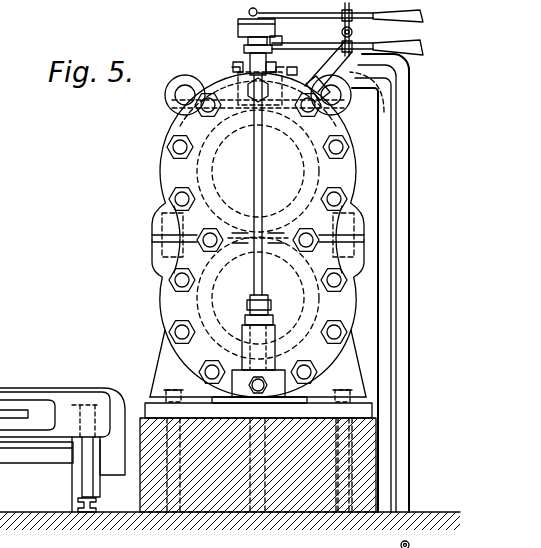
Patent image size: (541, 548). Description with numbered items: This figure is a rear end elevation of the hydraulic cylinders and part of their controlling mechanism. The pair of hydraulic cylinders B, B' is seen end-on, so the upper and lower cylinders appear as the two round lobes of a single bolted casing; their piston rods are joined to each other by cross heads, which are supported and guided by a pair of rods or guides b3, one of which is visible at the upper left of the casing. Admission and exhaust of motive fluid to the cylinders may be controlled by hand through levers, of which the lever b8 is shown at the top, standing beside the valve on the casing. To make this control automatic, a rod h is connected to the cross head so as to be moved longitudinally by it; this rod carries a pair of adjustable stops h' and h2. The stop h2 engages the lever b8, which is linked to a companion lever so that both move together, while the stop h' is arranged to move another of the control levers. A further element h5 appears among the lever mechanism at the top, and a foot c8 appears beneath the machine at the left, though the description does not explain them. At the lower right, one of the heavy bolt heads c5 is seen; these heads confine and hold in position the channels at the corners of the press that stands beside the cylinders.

The hydraulic cylinder B is at (247, 156).
The hydraulic cylinder B' is at (247, 318).
The rods or guides b3 is at (186, 97).
The lever b8 is at (311, 70).
The adjustable stop h' is at (341, 28).
The upper hand lever h5 is at (340, 11).
The rod h is at (362, 32).
The adjustable stop h2 is at (357, 56).
The bracket foot c8 is at (96, 503).
The head c5 is at (458, 545).